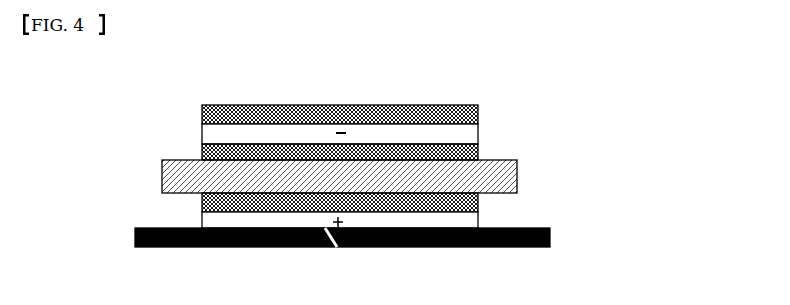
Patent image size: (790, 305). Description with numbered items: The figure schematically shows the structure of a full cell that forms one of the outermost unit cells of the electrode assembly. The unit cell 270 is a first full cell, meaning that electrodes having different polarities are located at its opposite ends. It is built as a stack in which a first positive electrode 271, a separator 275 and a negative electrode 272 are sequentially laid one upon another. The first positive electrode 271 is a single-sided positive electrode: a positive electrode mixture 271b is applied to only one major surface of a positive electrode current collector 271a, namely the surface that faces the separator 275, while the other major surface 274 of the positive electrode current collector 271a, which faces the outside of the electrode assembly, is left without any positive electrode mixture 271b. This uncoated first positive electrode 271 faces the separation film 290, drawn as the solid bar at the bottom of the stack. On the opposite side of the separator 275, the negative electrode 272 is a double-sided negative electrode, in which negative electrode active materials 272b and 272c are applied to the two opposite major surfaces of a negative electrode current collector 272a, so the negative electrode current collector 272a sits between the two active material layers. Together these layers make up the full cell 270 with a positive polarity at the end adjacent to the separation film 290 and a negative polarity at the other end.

The unit cell 270 is at (618, 102).
The first positive electrode 271 is at (83, 185).
The positive electrode current collector 271a is at (202, 225).
The positive electrode mixture 271b is at (202, 204).
The negative electrode 272 is at (84, 88).
The negative electrode current collector 272a is at (202, 132).
The negative electrode active material 272b is at (202, 111).
The negative electrode active material 272c is at (202, 150).
The other major surface 274 is at (337, 247).
The separator 275 is at (517, 176).
The separation film 290 is at (550, 238).